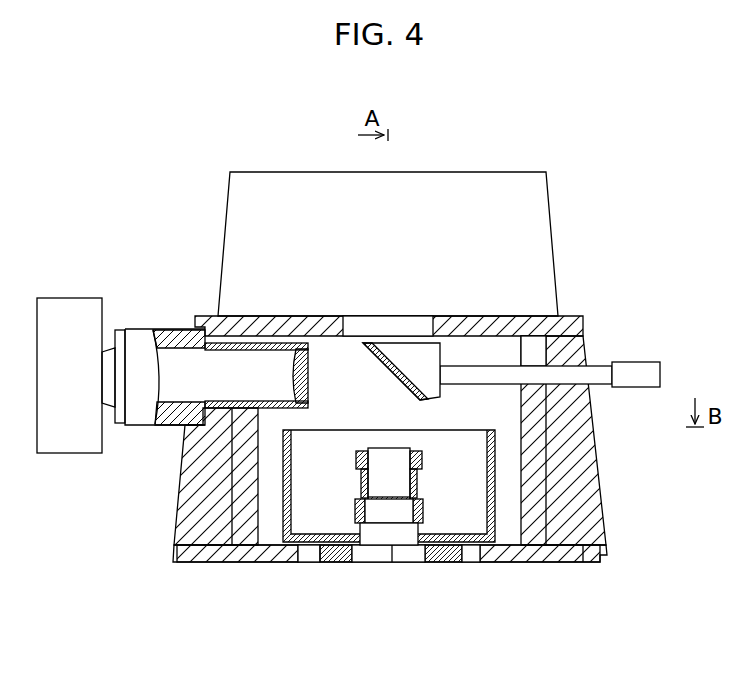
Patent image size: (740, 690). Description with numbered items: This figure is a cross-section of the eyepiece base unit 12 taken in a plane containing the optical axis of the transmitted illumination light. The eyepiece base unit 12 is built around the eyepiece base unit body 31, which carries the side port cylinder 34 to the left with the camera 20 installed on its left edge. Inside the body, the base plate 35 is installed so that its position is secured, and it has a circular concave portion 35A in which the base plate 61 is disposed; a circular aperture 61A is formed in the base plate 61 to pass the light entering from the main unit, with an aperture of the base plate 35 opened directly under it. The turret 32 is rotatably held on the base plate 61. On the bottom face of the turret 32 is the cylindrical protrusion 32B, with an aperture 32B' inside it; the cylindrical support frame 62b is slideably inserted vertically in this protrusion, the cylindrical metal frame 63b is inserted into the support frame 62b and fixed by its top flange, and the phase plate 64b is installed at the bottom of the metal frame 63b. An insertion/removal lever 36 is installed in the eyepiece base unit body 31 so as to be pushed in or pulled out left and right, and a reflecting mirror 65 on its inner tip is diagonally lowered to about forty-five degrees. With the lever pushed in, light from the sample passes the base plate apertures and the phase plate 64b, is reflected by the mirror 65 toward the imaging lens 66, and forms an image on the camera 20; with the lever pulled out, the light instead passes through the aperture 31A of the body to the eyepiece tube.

The eyepiece base unit 12 is at (598, 157).
The camera 20 is at (68, 455).
The eyepiece base unit body 31 is at (606, 510).
The aperture 31A is at (388, 316).
The turret 32 is at (497, 545).
The protrusion 32B is at (363, 485).
The aperture 32B' is at (421, 597).
The side port cylinder 34 is at (140, 330).
The base plate 35 is at (247, 565).
The circular concave portion 35A is at (308, 553).
The insertion/removal lever 36 is at (635, 372).
The base plate 61 is at (443, 563).
The aperture 61A is at (378, 553).
The support frame 62b is at (428, 462).
The metal frame 63b is at (410, 452).
The phase plate 64b is at (377, 547).
The reflecting mirror 65 is at (390, 380).
The imaging lens 66 is at (302, 378).